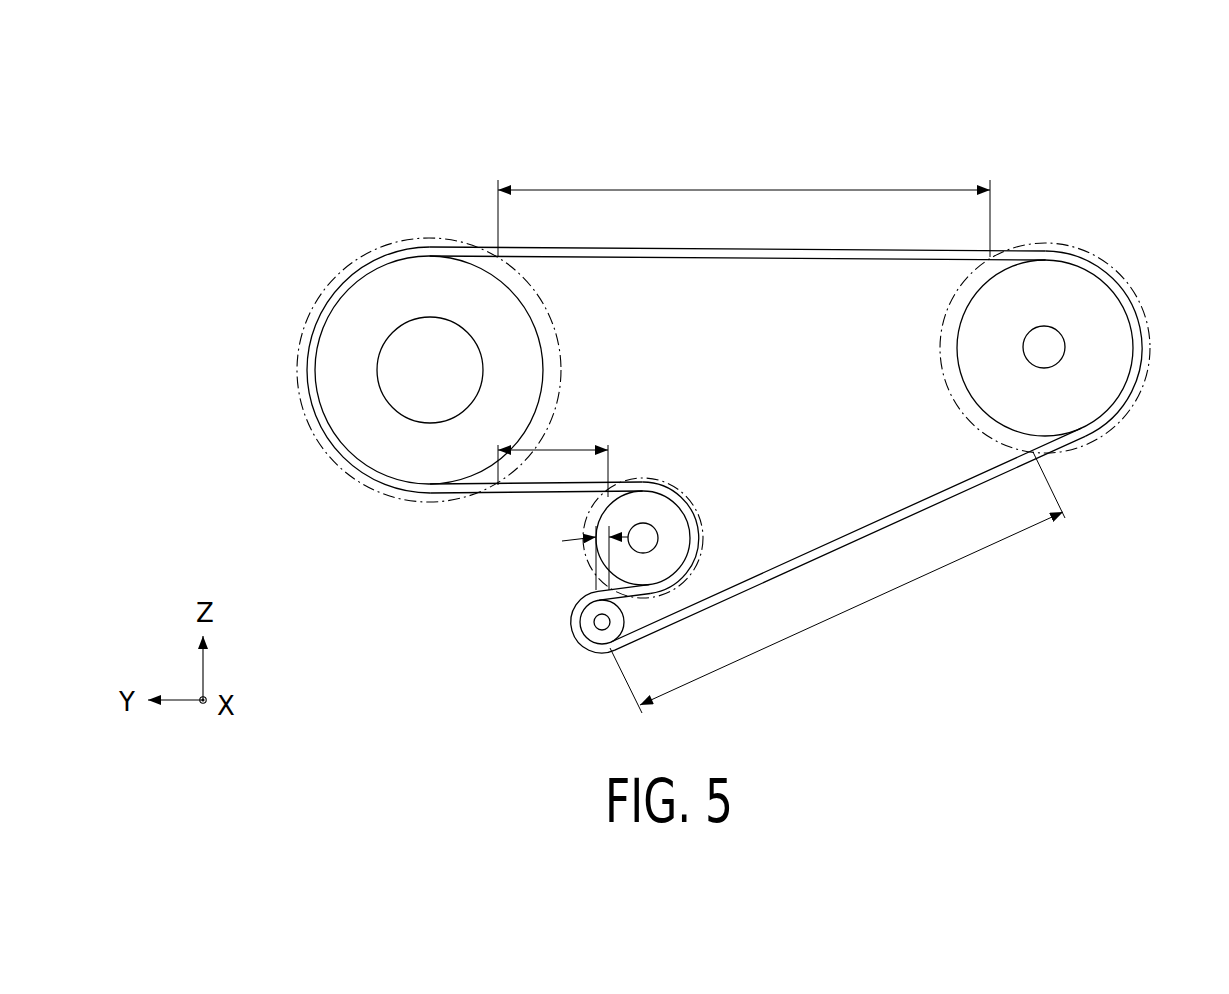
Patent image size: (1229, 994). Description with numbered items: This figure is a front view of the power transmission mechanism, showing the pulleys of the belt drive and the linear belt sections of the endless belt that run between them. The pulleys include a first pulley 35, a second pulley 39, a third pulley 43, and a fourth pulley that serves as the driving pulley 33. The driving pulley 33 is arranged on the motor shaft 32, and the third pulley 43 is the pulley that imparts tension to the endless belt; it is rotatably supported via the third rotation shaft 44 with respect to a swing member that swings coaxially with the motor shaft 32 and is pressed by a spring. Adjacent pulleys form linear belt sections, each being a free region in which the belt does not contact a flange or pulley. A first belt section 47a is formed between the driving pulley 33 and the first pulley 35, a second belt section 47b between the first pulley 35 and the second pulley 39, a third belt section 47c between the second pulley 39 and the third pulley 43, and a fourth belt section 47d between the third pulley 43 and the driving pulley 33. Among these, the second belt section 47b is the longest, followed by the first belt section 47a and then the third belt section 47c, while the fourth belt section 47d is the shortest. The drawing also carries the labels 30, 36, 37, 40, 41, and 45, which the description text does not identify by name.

The belt drive mechanism 30 is at (710, 145).
The motor shaft 32 is at (596, 620).
The driving pulley 33 is at (593, 637).
The first pulley 35 is at (1112, 305).
The shaft of driven pulley 36 is at (1050, 350).
The outer profile of driven pulley 37 is at (1102, 258).
The second pulley 39 is at (346, 392).
The shaft of drive pulley 40 is at (400, 350).
The outer profile of drive pulley 41 is at (358, 252).
The third pulley 43 is at (668, 512).
The third rotation shaft 44 is at (650, 537).
The outer profile of tension pulley 45 is at (642, 482).
The first belt section 47a is at (842, 538).
The second belt section 47b is at (748, 258).
The third belt section 47c is at (548, 493).
The fourth belt section 47d is at (598, 584).